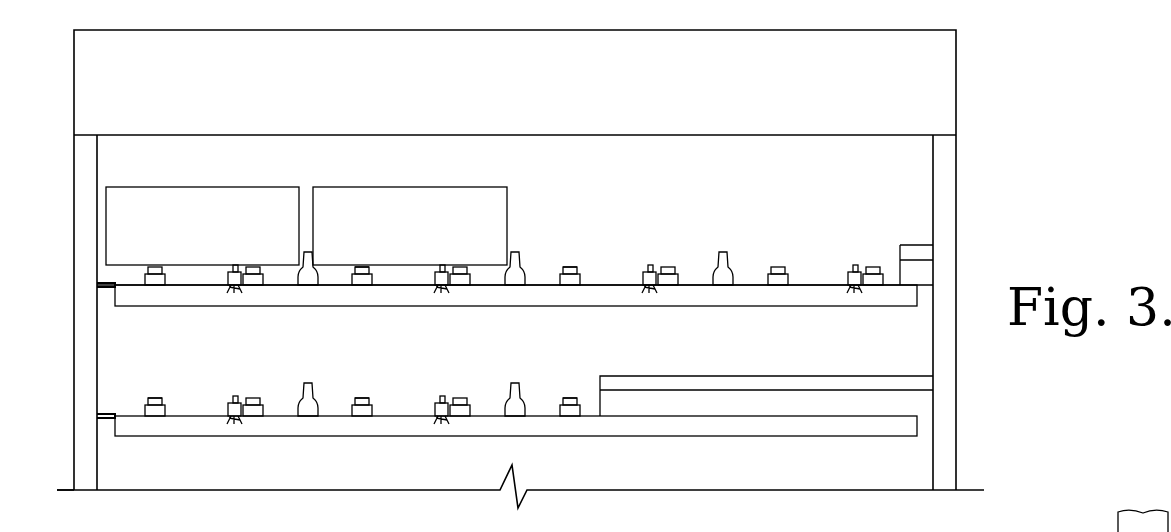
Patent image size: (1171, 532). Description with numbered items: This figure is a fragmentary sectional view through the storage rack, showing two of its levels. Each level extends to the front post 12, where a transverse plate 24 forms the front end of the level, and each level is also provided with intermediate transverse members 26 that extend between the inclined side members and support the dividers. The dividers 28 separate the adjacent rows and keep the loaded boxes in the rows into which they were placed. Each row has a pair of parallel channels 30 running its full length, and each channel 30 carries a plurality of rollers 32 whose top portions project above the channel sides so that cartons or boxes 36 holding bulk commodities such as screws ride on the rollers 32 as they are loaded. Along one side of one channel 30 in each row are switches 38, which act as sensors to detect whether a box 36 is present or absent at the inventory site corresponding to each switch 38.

The front post 12 is at (86, 474).
The transverse plate 24 is at (847, 395).
The intermediate transverse member 26 is at (607, 297).
The divider 28 is at (312, 265).
The channel 30 is at (372, 284).
The roller 32 is at (365, 268).
The box 36 is at (180, 197).
The switch 38 is at (645, 272).